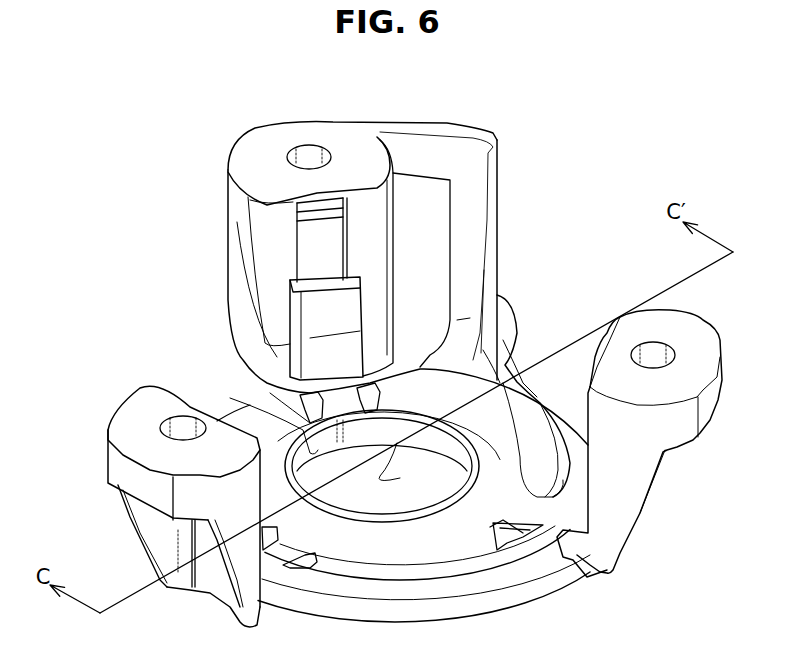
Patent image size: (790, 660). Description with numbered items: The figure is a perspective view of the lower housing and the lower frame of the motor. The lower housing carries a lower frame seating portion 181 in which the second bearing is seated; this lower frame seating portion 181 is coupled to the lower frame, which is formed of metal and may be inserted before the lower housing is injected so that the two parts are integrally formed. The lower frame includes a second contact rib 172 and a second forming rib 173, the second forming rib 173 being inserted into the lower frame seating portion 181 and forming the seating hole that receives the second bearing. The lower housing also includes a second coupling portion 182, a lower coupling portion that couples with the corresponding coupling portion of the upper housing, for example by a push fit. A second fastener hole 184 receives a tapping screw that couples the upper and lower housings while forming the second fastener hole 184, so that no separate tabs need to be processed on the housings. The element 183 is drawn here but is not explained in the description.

The slider 172 is at (313, 238).
The ring portion 173 is at (260, 440).
The rib 181 is at (540, 410).
The housing 182 is at (405, 287).
The base plate 183 is at (435, 540).
The hole 184 is at (303, 158).